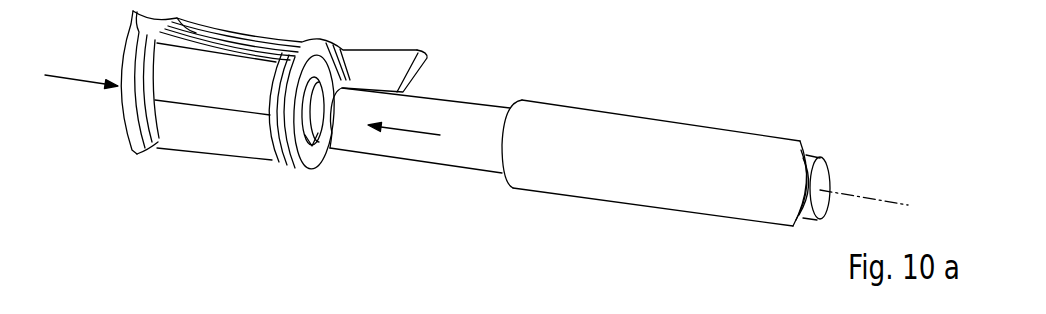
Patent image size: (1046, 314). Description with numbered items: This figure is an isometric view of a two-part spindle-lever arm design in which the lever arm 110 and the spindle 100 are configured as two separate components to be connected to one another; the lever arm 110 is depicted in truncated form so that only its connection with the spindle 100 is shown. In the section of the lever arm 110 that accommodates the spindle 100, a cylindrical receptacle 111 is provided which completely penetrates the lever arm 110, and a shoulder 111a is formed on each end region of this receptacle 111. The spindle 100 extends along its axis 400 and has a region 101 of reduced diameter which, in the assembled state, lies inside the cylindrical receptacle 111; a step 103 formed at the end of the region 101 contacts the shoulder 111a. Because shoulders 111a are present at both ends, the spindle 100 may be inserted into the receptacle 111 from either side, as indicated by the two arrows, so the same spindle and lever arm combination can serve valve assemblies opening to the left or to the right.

The spindle 100 is at (652, 120).
The region of reduced diameter 101 is at (468, 122).
The step 103 is at (504, 178).
The lever arm 110 is at (211, 152).
The cylindrical receptacle 111 is at (312, 146).
The shoulder 111a is at (138, 150).
The axis 400 is at (862, 197).